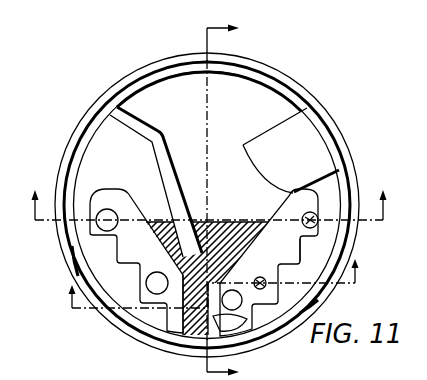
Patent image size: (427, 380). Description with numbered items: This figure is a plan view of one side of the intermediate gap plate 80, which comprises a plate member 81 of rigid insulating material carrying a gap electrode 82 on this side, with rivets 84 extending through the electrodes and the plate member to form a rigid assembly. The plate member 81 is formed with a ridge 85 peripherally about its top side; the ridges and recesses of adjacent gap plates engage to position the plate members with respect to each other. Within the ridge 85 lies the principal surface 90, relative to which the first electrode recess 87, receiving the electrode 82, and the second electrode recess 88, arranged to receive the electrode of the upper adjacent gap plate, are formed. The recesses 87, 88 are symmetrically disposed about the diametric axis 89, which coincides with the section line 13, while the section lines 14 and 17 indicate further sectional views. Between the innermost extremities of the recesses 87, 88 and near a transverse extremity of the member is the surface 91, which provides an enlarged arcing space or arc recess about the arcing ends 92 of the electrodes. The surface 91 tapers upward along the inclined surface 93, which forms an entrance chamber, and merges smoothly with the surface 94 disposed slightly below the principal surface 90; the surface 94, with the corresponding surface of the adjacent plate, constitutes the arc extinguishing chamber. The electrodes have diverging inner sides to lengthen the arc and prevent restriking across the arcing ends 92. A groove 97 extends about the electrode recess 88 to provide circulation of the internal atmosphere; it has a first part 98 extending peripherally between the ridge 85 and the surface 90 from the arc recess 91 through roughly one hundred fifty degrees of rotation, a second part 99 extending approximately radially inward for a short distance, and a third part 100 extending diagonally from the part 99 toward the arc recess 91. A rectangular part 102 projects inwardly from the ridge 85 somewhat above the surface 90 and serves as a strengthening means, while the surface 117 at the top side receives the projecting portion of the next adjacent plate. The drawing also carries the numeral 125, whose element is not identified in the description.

The section line 13 is at (235, 201).
The section line 14 is at (206, 196).
The section line 17 is at (215, 283).
The intermediate gap plate 80 is at (330, 106).
The plate member 81 is at (290, 86).
The gap electrode 82 is at (312, 305).
The rivet 84 is at (267, 286).
The ridge 85 is at (120, 86).
The first electrode recess 87 is at (300, 252).
The second electrode recess 88 is at (117, 252).
The diametric axis 89 is at (212, 114).
The surface of the plate member 90 is at (97, 187).
The arc recess surface 91 is at (186, 333).
The arcing end 92 is at (263, 338).
The inclined surface 93 is at (206, 277).
The arc extinguishing chamber surface 94 is at (221, 187).
The groove 97 is at (72, 268).
The first part of the groove 98 is at (125, 312).
The second part of the groove 99 is at (139, 119).
The third part of the groove 100 is at (173, 164).
The rectangular part 102 is at (323, 148).
The surface 117 is at (100, 137).
The pivot pin 125 is at (318, 221).